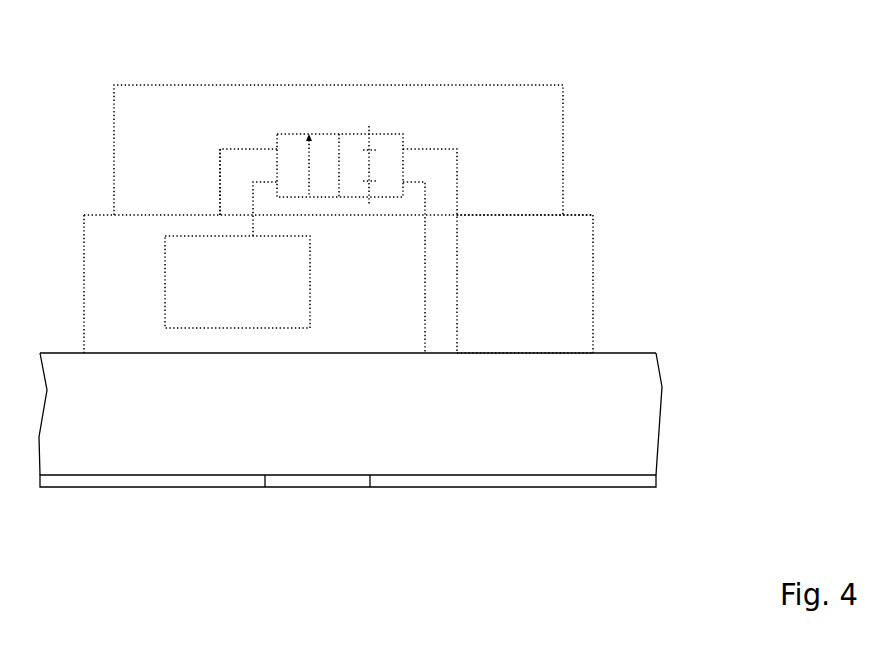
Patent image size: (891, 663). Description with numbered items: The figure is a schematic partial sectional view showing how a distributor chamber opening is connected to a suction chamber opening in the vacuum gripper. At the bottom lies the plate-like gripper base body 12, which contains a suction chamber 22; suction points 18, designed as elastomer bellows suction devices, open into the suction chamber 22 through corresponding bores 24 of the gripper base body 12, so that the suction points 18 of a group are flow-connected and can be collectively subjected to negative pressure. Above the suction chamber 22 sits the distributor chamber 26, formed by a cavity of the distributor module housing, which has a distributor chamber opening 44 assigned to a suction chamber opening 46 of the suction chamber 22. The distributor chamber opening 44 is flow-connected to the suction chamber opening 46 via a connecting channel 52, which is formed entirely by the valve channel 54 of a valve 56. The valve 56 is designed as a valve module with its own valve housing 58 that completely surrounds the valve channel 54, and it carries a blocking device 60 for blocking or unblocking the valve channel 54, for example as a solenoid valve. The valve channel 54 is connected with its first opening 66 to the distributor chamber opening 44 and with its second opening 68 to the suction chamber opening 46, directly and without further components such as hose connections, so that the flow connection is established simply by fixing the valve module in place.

The gripper base body 12 is at (634, 284).
The suction points 18 is at (310, 508).
The suction chamber 22 is at (185, 428).
The bores 24 is at (273, 478).
The distributor chamber 26 is at (228, 298).
The distributor chamber opening 44 is at (227, 230).
The suction chamber opening 46 is at (457, 314).
The connecting channel 52 is at (253, 139).
The valve channel 54 is at (442, 149).
The valve 56 is at (588, 147).
The valve housing 58 is at (530, 85).
The blocking device 60 is at (348, 124).
The first opening 66 is at (220, 215).
The second opening 68 is at (457, 215).